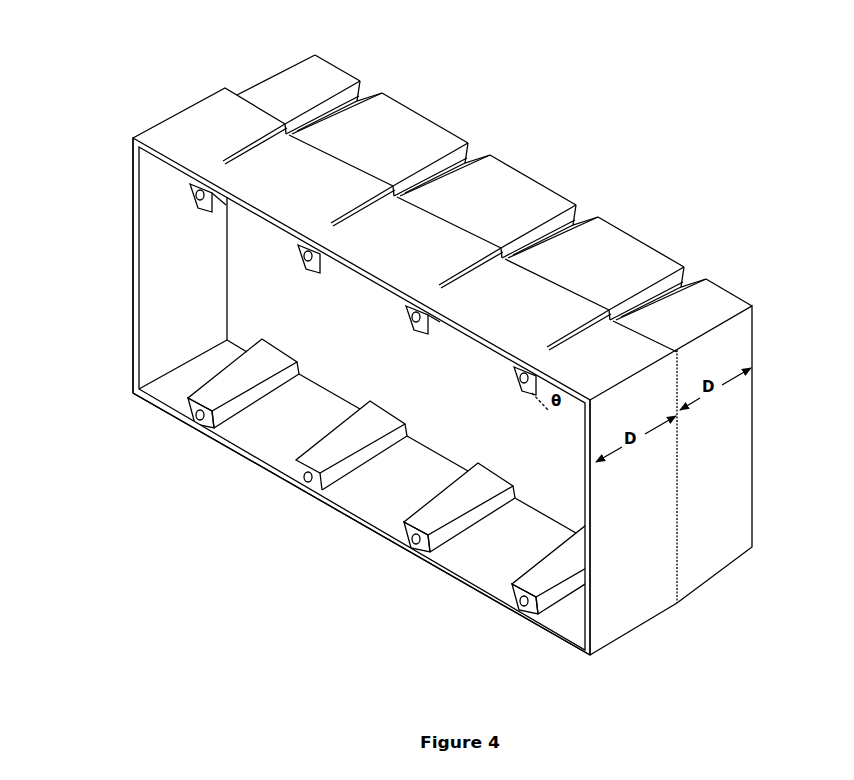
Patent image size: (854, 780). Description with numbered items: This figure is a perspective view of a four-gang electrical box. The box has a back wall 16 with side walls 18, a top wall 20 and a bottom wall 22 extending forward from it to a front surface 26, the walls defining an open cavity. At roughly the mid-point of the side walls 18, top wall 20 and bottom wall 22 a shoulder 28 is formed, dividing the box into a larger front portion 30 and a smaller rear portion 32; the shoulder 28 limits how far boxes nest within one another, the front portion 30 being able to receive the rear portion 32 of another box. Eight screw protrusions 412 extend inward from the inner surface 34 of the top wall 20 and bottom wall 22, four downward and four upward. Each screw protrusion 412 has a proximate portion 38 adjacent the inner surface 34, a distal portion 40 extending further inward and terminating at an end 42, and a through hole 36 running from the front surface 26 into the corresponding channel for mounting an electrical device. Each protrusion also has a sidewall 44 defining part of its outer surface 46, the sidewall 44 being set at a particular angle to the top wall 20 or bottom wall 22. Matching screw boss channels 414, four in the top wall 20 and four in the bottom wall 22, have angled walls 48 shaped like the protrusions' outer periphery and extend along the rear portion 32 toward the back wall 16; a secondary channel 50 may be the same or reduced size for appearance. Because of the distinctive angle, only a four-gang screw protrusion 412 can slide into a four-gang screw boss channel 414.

The back wall 16 is at (756, 505).
The side walls 18 is at (131, 341).
The top wall 20 is at (210, 136).
The bottom wall 22 is at (222, 448).
The front surface 26 is at (132, 378).
The shoulder 28 is at (310, 397).
The front portion 30 is at (616, 627).
The rear portion 32 is at (736, 440).
The inner surface 34 is at (176, 279).
The through hole 36 is at (300, 259).
The proximate portion 38 is at (190, 185).
The distal portion 40 is at (194, 197).
The end 42 is at (363, 437).
The sidewall 44 is at (427, 313).
The outer surface 46 is at (432, 318).
The angled walls 48 is at (371, 100).
The secondary channel 50 is at (285, 131).
The screw protrusions 412 is at (208, 207).
The screw boss channels 414 is at (313, 108).